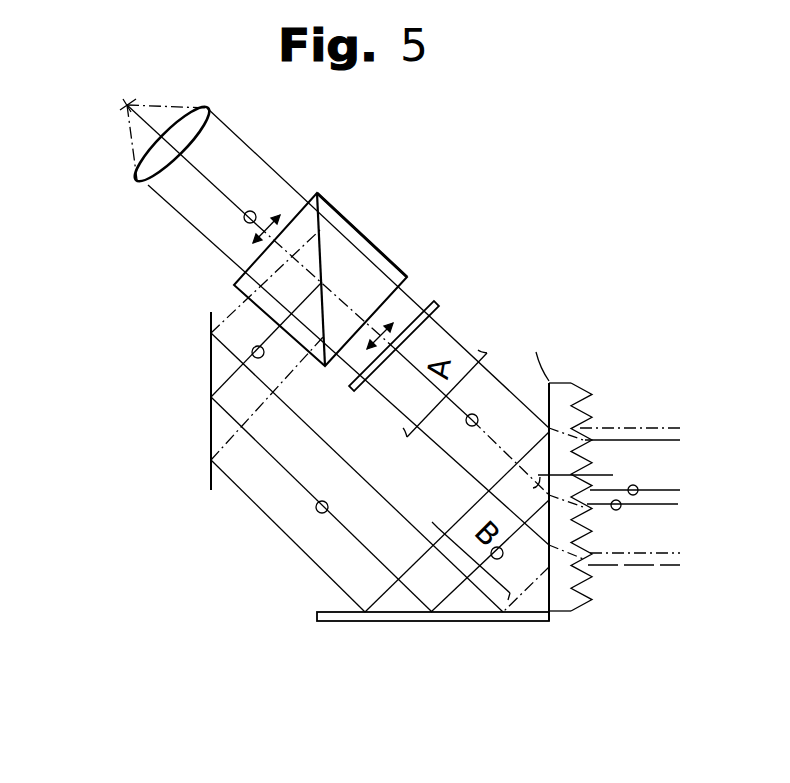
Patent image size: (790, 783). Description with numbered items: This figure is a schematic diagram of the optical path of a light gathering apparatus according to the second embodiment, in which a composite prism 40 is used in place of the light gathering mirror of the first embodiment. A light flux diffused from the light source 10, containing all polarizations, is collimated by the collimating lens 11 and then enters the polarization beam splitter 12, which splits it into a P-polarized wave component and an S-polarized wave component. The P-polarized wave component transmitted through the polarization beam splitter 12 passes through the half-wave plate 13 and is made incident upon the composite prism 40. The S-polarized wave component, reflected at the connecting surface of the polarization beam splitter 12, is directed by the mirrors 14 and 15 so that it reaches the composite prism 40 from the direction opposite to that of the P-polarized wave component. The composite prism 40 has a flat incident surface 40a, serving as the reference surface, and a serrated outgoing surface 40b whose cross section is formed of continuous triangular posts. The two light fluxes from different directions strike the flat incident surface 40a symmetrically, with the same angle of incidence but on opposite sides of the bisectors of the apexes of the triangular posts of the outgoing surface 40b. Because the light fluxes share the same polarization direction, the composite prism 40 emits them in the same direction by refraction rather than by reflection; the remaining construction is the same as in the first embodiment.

The light source 10 is at (124, 105).
The collimating lens 11 is at (145, 188).
The polarization beam splitter 12 is at (366, 235).
The λ/2 plate 13 is at (438, 307).
The mirror 14 is at (211, 447).
The mirror 15 is at (388, 622).
The composite prism 40 is at (571, 384).
The flat incident surface 40a is at (543, 568).
The serrated outgoing surface 40b is at (581, 601).